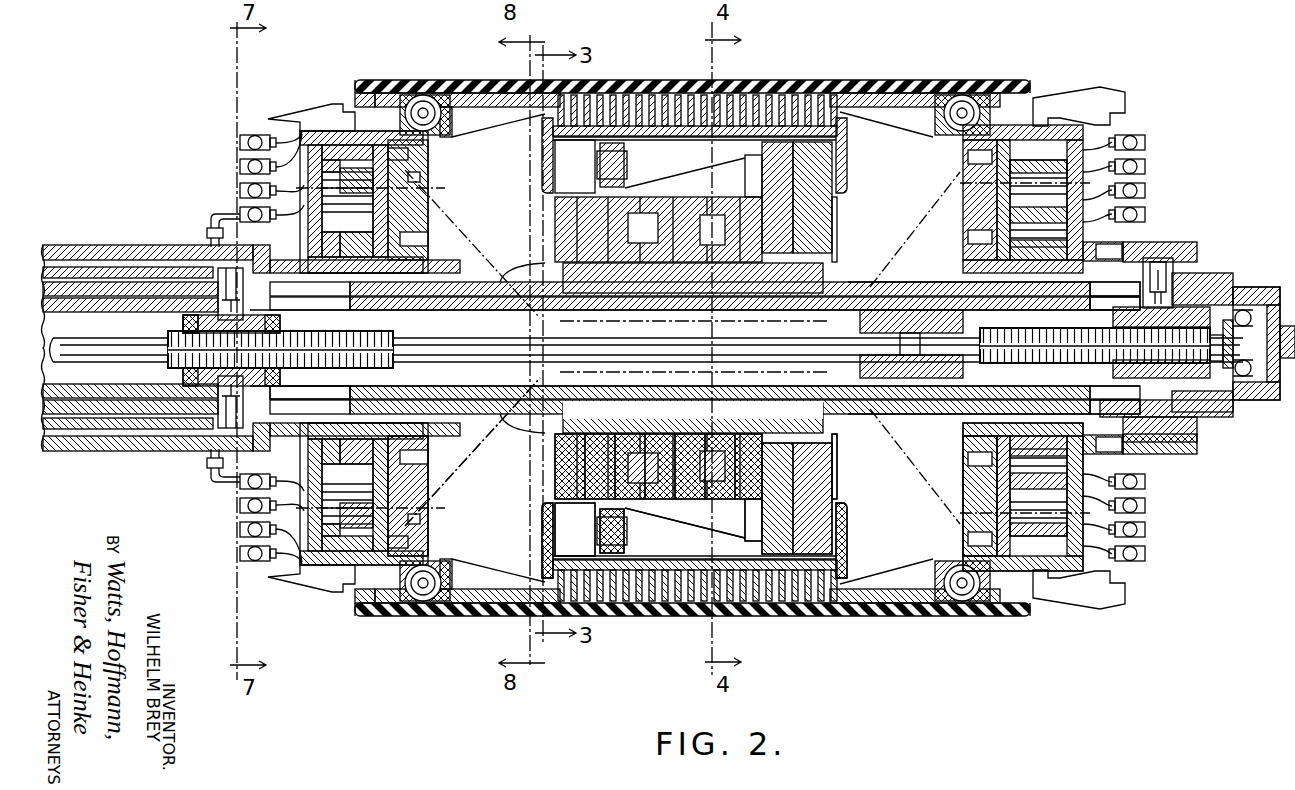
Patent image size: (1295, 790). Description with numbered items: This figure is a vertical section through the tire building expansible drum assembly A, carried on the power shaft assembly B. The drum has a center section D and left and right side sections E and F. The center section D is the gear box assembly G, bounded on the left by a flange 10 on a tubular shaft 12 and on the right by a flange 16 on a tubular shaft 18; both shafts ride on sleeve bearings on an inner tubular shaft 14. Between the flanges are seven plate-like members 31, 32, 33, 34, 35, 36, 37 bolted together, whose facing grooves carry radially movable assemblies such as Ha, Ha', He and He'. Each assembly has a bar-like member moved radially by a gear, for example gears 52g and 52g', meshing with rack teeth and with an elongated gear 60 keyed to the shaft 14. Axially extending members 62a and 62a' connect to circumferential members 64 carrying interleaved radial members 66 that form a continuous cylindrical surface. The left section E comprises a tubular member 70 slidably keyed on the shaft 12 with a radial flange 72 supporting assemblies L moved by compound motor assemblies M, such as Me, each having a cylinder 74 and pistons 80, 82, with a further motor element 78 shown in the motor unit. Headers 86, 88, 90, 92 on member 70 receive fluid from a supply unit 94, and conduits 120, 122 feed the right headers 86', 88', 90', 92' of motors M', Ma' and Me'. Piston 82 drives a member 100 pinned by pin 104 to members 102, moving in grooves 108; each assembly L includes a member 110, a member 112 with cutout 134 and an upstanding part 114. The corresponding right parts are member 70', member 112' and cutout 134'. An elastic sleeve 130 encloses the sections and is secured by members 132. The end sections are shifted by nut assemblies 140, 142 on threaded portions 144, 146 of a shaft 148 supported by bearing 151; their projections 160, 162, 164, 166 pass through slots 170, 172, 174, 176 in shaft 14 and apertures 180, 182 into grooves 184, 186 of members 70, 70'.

The flange 10 is at (545, 218).
The tubular shaft 12 is at (496, 282).
The tubular shaft 14 is at (500, 311).
The flange 16 is at (838, 468).
The tubular shaft 18 is at (940, 282).
The plate-like member 31 is at (592, 434).
The plate-like member 32 is at (624, 434).
The plate-like member 33 is at (660, 434).
The plate-like member 34 is at (692, 434).
The plate-like member 35 is at (726, 434).
The plate-like member 36 is at (758, 434).
The plate-like member 37 is at (790, 434).
The gear 52g is at (856, 466).
The gear 52g' is at (859, 229).
The elongated gear 60 is at (628, 300).
The axially extending member 62a is at (575, 166).
The axially extending member 62a' is at (575, 529).
The circumferentially extending member 64 is at (751, 133).
The radially extending spaced members 66 is at (697, 84).
The tubular member 70 is at (356, 256).
The tubular member 70' is at (1140, 252).
The radial flange 72 is at (420, 240).
The cylinder 74 is at (318, 248).
The rotor shaft 78 is at (302, 194).
The piston 80 is at (347, 201).
The piston 82 is at (356, 212).
The header 86 is at (248, 129).
The header 88 is at (248, 153).
The header 90 is at (249, 177).
The header 92 is at (249, 201).
The header 86' is at (1150, 142).
The header 88' is at (1150, 166).
The header 90' is at (1150, 190).
The header 92' is at (1150, 214).
The fluid supply unit 94 is at (122, 245).
The member 100 is at (357, 131).
The member 102 is at (420, 177).
The pin 104 is at (393, 201).
The groove 108 is at (426, 156).
The member 110 is at (506, 96).
The second member 112 is at (311, 102).
The second member 112' is at (1092, 99).
The upstanding part 114 is at (425, 95).
The conduit 120 is at (450, 204).
The conduit 122 is at (480, 464).
The elastic sleeve 130 is at (890, 92).
The member 132 is at (356, 95).
The circumferential aperture 134 is at (330, 67).
The circumferential aperture 134' is at (1052, 71).
The nut assembly 140 is at (263, 322).
The nut assembly 142 is at (1112, 318).
The threaded portion 144 is at (343, 369).
The threaded portion 146 is at (1095, 357).
The shaft 148 is at (486, 366).
The antifriction bearing 151 is at (1243, 291).
The projection 160 is at (190, 318).
The projection 162 is at (190, 378).
The projection 164 is at (1188, 273).
The projection 166 is at (1193, 428).
The slot 170 is at (705, 304).
The slot 172 is at (310, 393).
The slot 174 is at (1115, 304).
The slot 176 is at (1115, 406).
The aperture 180 is at (705, 289).
The aperture 182 is at (1115, 289).
The circumferentially extending groove 184 is at (232, 268).
The circumferentially extending groove 186 is at (1156, 258).
The drum assembly A is at (956, 90).
The power shaft assembly B is at (89, 243).
The center section D is at (786, 82).
The left-hand side section E is at (284, 103).
The right-hand side section F is at (1101, 89).
The gear box assembly G is at (846, 207).
The fluid operated motor assembly M is at (373, 204).
The fluid operated motor assembly M' is at (1054, 497).
The radially movable assembly Ha is at (637, 165).
The radially movable assembly Ha' is at (637, 531).
The radially movable assembly He is at (693, 519).
The radially movable assembly He' is at (693, 180).
The fluid operated motor assembly Ma' is at (927, 229).
The fluid operated motor assembly Me is at (427, 492).
The fluid operated motor assembly Me' is at (955, 489).